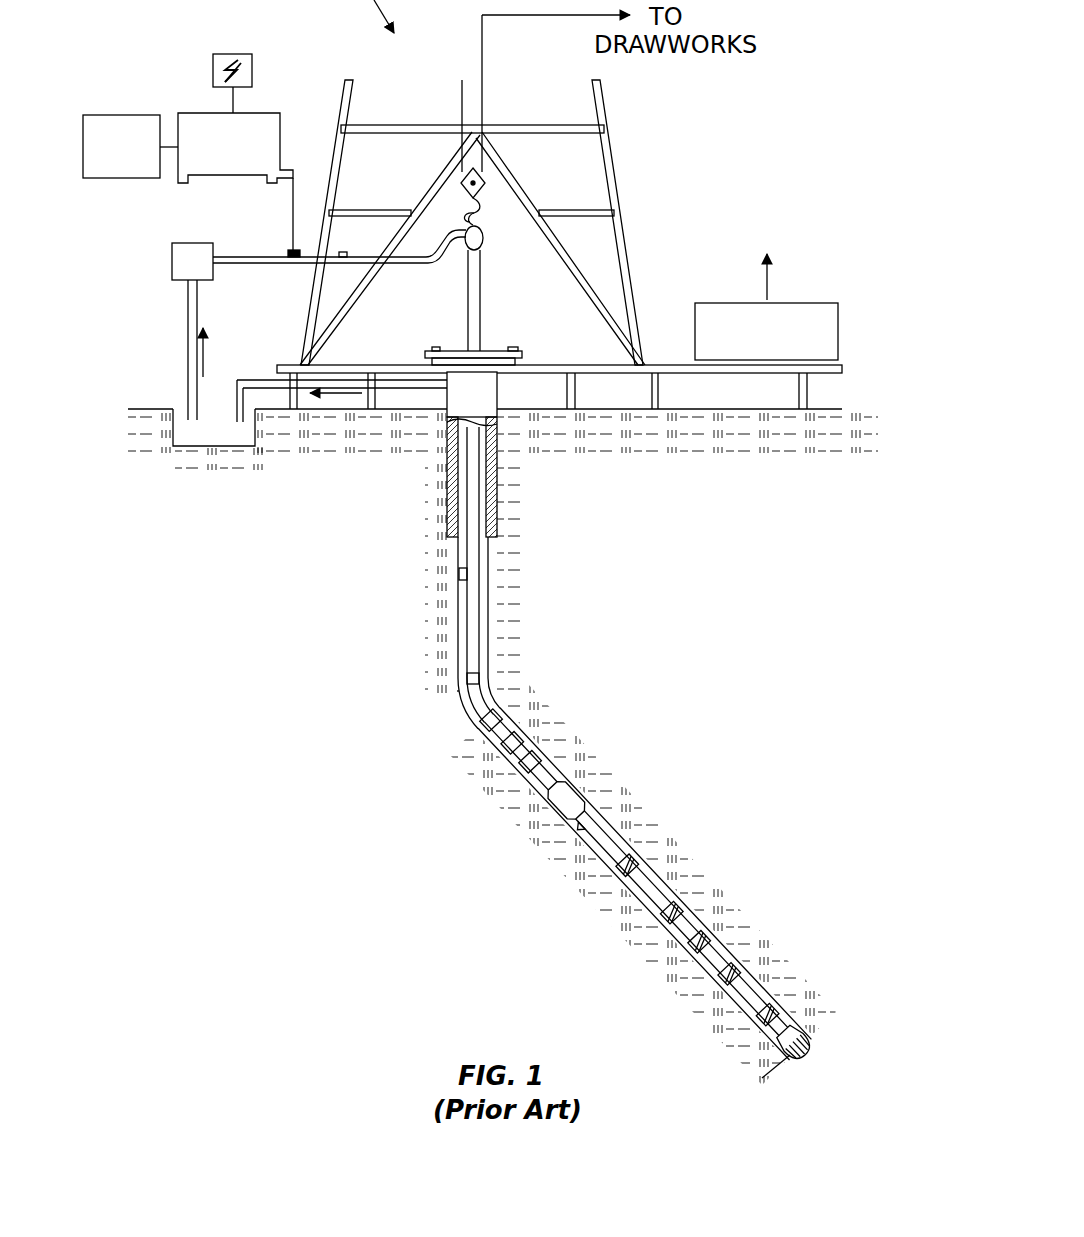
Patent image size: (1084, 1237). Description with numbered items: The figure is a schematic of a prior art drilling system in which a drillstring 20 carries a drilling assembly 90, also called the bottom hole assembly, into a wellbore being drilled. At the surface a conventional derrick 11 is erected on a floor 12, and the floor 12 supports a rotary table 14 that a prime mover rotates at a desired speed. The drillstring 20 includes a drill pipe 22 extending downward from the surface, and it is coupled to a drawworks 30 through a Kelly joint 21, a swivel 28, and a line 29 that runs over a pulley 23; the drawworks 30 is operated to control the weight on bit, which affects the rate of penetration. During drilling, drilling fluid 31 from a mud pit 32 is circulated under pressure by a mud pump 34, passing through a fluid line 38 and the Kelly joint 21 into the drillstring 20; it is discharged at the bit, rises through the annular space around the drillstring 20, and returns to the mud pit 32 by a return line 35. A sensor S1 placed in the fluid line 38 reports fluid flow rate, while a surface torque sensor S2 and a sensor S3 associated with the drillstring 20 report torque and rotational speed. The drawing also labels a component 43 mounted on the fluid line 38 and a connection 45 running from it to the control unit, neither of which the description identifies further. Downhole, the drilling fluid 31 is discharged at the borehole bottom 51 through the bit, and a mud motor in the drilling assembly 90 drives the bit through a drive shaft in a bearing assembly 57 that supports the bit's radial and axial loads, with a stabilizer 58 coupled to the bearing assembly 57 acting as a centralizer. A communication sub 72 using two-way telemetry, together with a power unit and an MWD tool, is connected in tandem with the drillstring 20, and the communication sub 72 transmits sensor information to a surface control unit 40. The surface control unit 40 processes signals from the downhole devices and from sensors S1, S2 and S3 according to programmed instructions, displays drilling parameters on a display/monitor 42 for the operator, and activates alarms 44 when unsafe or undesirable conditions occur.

The derrick 11 is at (491, 222).
The floor 12 is at (559, 354).
The rotary table 14 is at (488, 333).
The drillstring 20 is at (491, 622).
The Kelly joint 21 is at (505, 300).
The drill pipe 22 is at (458, 602).
The pulley 23 is at (478, 192).
The swivel 28 is at (467, 243).
The line 29 is at (502, 93).
The drawworks 30 is at (782, 307).
The drilling fluid 31 is at (182, 425).
The mud pit 32 is at (238, 443).
The mud pump 34 is at (172, 257).
The return line 35 is at (342, 440).
The fluid line 38 is at (188, 348).
The surface control unit 40 is at (200, 113).
The display/monitor 42 is at (255, 45).
The flow sensor 43 is at (290, 248).
The alarms 44 is at (140, 180).
The signal line 45 is at (309, 167).
The borehole bottom 51 is at (768, 1085).
The bearing assembly 57 is at (777, 978).
The stabilizer 58 is at (807, 977).
The communication sub 72 is at (468, 703).
The drilling assembly 90 is at (688, 782).
The sensor S1 is at (358, 240).
The surface torque sensor S2 is at (518, 347).
The sensor S3 is at (432, 347).